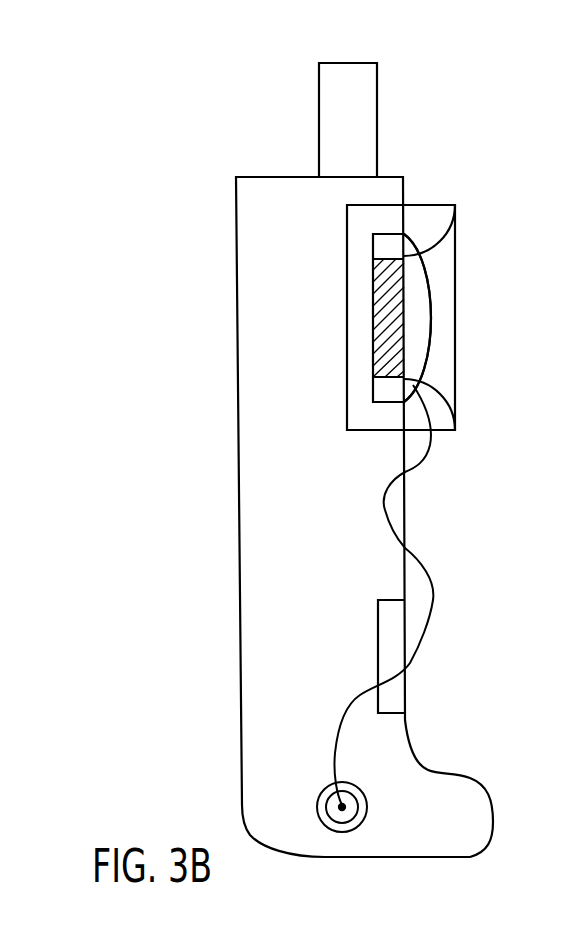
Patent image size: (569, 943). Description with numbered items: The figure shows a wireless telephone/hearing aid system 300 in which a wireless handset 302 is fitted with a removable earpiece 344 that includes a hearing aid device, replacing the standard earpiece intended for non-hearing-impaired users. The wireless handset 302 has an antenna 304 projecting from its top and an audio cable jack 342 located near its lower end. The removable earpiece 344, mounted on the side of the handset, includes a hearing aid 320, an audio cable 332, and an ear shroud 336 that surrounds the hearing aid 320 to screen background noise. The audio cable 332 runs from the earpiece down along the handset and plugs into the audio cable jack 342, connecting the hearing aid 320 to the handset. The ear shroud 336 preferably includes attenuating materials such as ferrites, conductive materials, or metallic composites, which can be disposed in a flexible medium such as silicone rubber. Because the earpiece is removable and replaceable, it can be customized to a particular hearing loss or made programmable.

The wireless telephone/hearing aid system 300 is at (228, 66).
The wireless handset 302 is at (242, 463).
The antenna 304 is at (377, 113).
The hearing aid 320 is at (406, 306).
The audio cable 332 is at (422, 562).
The ear shroud 336 is at (435, 205).
The audio cable jack 342 is at (317, 800).
The removable earpiece 344 is at (453, 256).